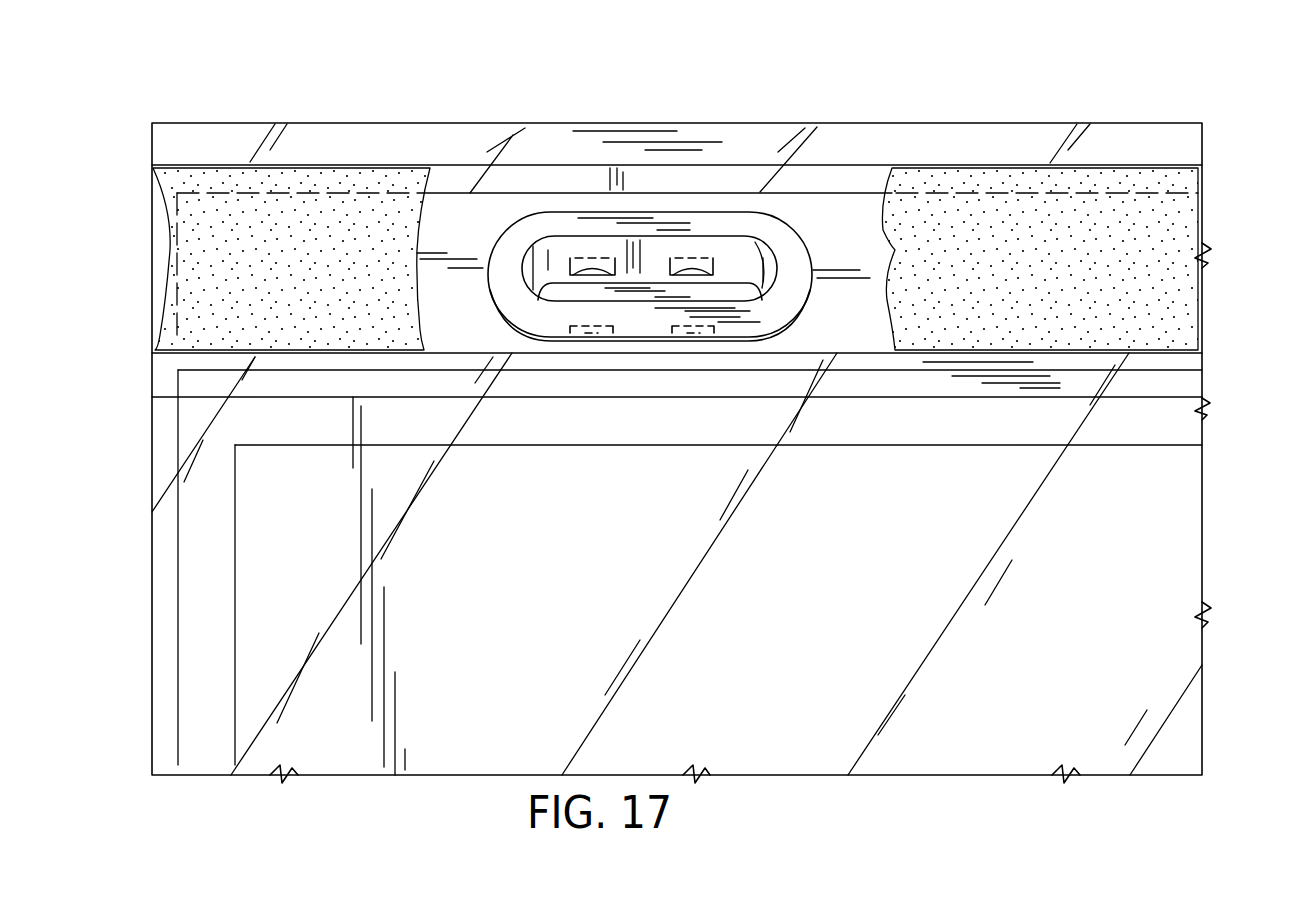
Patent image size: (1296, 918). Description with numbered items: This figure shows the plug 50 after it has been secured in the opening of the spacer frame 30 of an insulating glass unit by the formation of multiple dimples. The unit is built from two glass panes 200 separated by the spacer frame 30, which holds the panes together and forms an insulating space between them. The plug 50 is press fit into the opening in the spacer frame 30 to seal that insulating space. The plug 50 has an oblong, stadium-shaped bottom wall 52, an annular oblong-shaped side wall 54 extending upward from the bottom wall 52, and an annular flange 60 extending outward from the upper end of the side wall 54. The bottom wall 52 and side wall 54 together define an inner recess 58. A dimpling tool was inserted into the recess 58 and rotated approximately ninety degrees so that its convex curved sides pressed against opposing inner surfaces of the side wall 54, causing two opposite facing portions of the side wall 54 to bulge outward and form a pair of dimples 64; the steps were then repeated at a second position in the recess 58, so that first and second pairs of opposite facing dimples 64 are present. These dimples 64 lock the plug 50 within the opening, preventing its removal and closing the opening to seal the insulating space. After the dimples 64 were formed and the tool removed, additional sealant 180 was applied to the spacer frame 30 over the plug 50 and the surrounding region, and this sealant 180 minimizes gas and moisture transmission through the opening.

The glass panes 200 is at (963, 140).
The sealant 180 is at (1170, 228).
The spacer frame 30 is at (862, 208).
The plug 50 is at (802, 218).
The annular flange 60 is at (530, 228).
The side wall 54 is at (737, 262).
The inner recess 58 is at (650, 245).
The bottom wall 52 is at (760, 290).
The dimples 64 is at (607, 258).